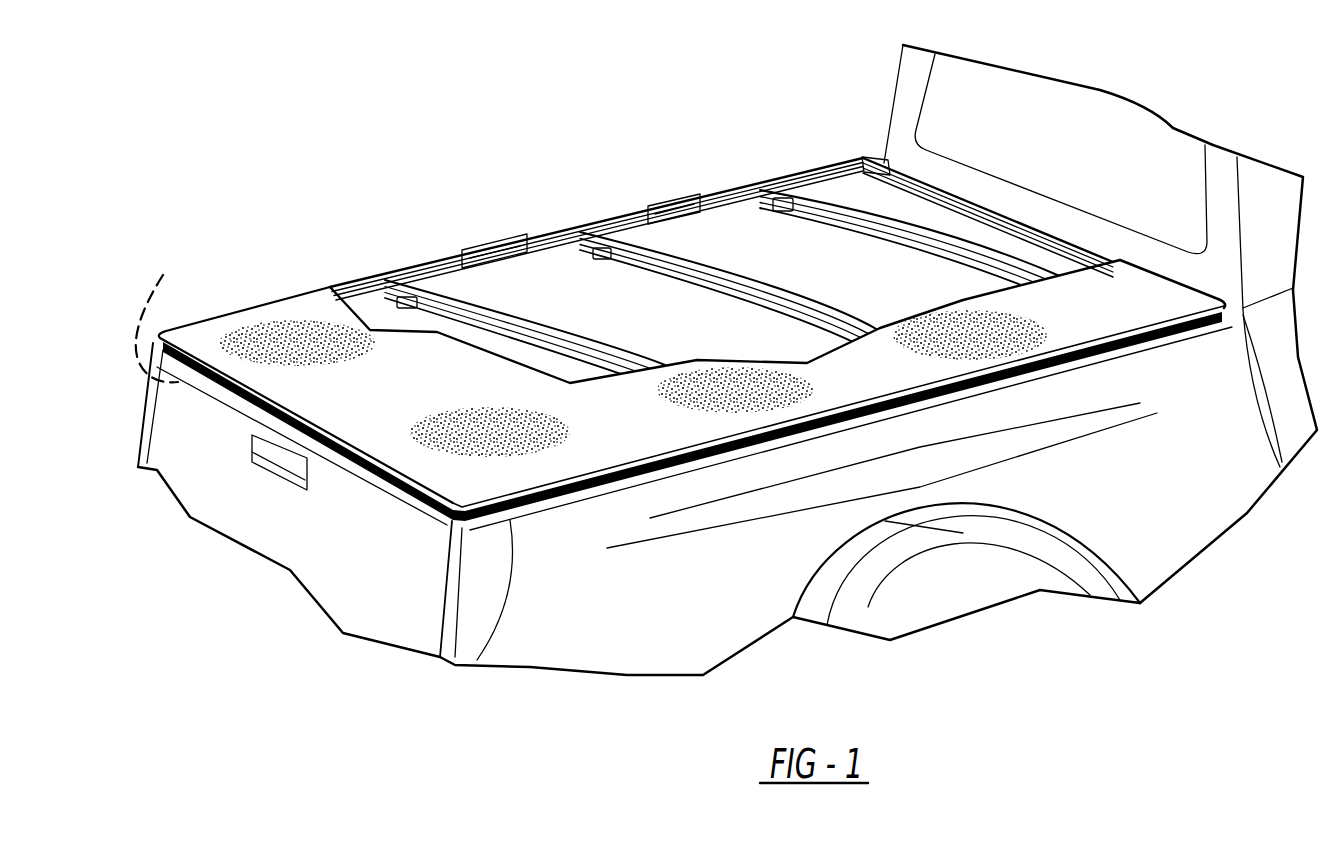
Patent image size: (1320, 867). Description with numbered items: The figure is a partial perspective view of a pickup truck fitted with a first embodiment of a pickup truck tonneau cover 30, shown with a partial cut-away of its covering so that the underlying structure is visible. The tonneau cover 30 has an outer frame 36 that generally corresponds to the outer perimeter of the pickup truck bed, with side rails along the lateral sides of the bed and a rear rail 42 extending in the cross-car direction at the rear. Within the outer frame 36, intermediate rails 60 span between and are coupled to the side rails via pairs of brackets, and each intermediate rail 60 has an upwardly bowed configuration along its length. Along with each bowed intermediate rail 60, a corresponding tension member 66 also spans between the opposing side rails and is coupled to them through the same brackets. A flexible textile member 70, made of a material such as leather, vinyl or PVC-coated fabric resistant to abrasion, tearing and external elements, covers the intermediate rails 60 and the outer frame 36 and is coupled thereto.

The pickup truck tonneau cover 30 is at (650, 92).
The outer frame 36 is at (910, 172).
The rear rail 42 is at (158, 311).
The intermediate rail 60 is at (556, 320).
The tension member 66 is at (510, 342).
The flexible textile member 70 is at (288, 340).